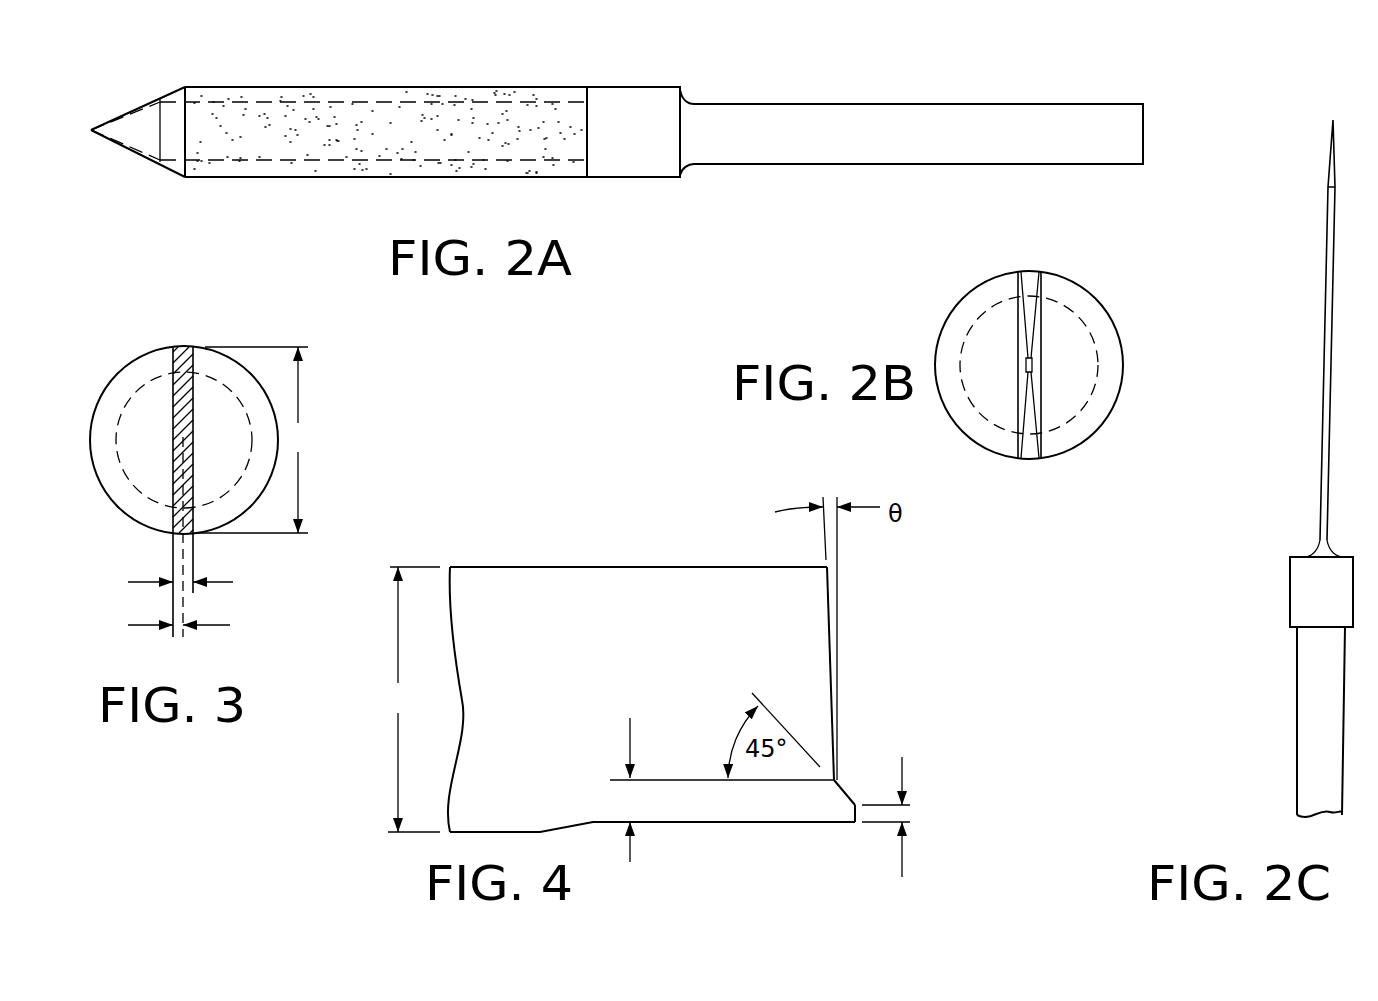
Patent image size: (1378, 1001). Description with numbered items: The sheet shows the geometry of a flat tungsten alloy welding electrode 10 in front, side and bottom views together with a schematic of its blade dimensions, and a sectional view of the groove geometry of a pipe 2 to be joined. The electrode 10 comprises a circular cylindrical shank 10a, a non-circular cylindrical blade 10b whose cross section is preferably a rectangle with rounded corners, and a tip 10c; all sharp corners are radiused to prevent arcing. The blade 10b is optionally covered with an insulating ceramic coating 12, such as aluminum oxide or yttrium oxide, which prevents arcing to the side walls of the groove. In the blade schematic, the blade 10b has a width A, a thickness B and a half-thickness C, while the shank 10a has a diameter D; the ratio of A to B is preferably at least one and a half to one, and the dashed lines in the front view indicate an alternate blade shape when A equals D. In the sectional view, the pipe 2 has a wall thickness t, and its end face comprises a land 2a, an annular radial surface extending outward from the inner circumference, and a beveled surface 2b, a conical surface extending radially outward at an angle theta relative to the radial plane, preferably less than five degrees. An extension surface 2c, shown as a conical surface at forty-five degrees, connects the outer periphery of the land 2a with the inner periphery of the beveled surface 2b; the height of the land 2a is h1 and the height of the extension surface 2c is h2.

In FIG. 2C, the electrode 10 is at (1288, 530).
In FIG. 2A, the shank 10a is at (900, 105).
In FIG. 3, the shank 10a is at (120, 507).
In FIG. 2B, the shank 10a is at (1068, 307).
In FIG. 2C, the shank 10a is at (1305, 723).
In FIG. 2A, the blade 10b is at (563, 178).
In FIG. 3, the blade 10b is at (183, 348).
In FIG. 2B, the blade 10b is at (1028, 270).
In FIG. 2C, the blade 10b is at (1327, 265).
In FIG. 2A, the tip 10c is at (91, 130).
In FIG. 2B, the tip 10c is at (1032, 349).
In FIG. 2C, the tip 10c is at (1333, 118).
In FIG. 2A, the ceramic coating 12 is at (270, 167).
In FIG. 4, the pipe 2 is at (517, 713).
In FIG. 4, the land 2a is at (858, 820).
In FIG. 4, the beveled surface 2b is at (833, 640).
In FIG. 4, the extension surface 2c is at (848, 790).
In FIG. 3, the blade width A is at (252, 440).
In FIG. 3, the blade thickness B is at (168, 583).
In FIG. 3, the blade half-thickness C is at (167, 626).
In FIG. 3, the shank diameter D is at (140, 382).
In FIG. 4, the wall thickness t is at (414, 699).
In FIG. 4, the height of land h1 is at (901, 817).
In FIG. 4, the height of extension h2 is at (635, 790).